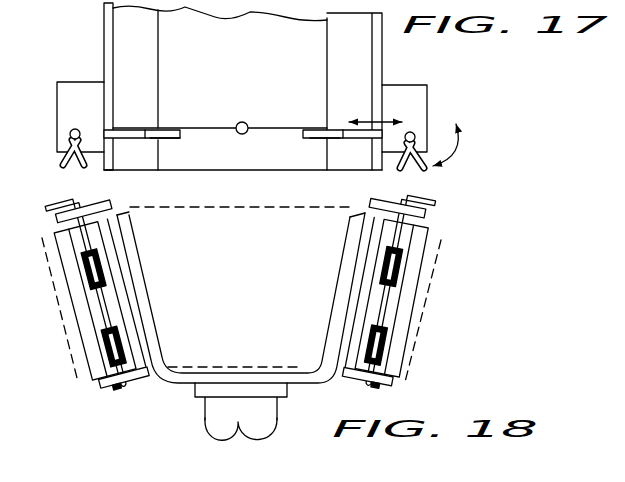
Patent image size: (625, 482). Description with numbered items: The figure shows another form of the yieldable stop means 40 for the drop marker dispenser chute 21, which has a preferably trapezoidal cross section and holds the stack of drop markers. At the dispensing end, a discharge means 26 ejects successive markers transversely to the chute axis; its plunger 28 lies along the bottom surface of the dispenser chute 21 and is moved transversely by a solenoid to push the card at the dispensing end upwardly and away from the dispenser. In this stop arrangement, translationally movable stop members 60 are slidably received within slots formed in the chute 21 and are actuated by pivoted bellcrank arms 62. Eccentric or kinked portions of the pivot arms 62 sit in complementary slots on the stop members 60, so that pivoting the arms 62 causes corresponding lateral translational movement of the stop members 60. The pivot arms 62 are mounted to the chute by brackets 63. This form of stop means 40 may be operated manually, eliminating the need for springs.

In FIG. 17, the dispenser chute 21 is at (349, 42).
In FIG. 18, the discharge means 26 is at (203, 421).
In FIG. 17, the plunger 28 is at (244, 121).
In FIG. 17, the stop means 40 is at (171, 126).
In FIG. 18, the stop means 40 is at (152, 252).
In FIG. 17, the stop members 60 is at (163, 140).
In FIG. 18, the stop members 60 is at (157, 325).
In FIG. 17, the pivoted bellcrank arms 62 is at (64, 137).
In FIG. 18, the pivoted bellcrank arms 62 is at (100, 307).
In FIG. 17, the brackets 63 is at (78, 90).
In FIG. 18, the brackets 63 is at (100, 208).